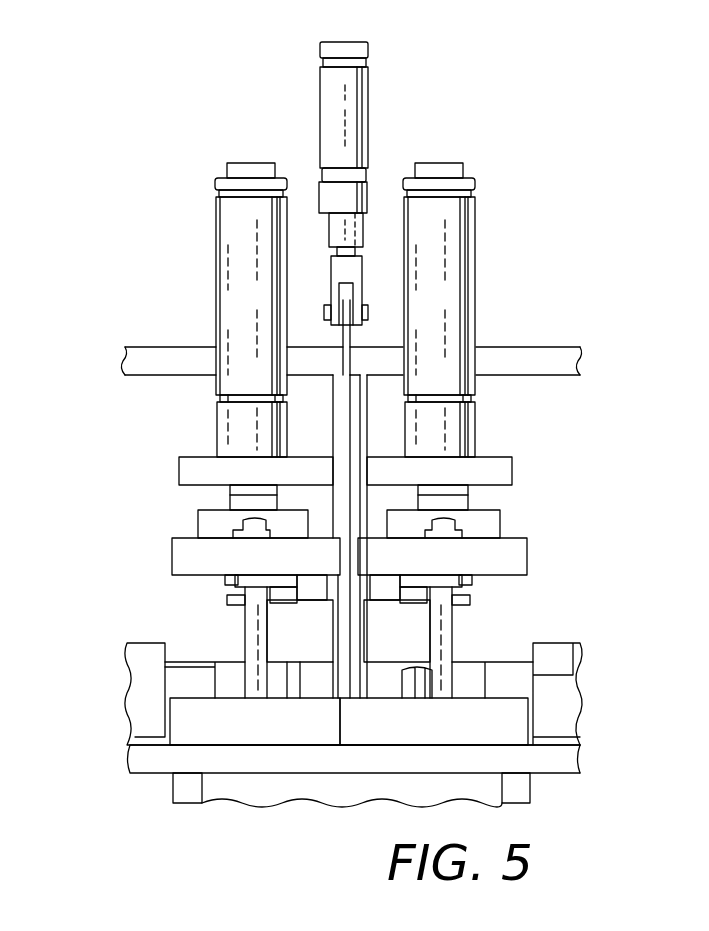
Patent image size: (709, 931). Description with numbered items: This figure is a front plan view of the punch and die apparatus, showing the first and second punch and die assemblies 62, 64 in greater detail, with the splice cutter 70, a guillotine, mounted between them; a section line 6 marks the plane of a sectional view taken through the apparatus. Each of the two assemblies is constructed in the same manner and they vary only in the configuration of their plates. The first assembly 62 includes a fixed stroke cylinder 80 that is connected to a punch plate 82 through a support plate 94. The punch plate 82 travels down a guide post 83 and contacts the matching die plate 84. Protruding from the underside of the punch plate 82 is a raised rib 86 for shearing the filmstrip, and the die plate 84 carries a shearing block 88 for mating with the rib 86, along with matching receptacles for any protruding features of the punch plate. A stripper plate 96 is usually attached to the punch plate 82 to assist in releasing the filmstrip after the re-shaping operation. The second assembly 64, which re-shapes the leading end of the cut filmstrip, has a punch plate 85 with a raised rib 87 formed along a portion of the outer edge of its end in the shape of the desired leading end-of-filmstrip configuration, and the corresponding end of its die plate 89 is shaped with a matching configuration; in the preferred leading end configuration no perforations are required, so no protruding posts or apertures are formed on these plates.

The section line 6- 6 is at (311, 200).
The splice cutter 70 is at (394, 127).
The fixed stroke cylinder 80 is at (228, 243).
The first punch and die assembly 62 is at (200, 418).
The second punch and die assembly 64 is at (483, 423).
The support plate 94 is at (179, 475).
The punch plate 82 is at (172, 553).
The punch plate 85 is at (527, 548).
The stripper plate 96 is at (225, 600).
The die plate 84 is at (228, 659).
The raised rib 86 is at (307, 603).
The raised rib 87 is at (392, 598).
The die plate 89 is at (503, 660).
The guide post 83 is at (253, 685).
The shearing block 88 is at (322, 688).